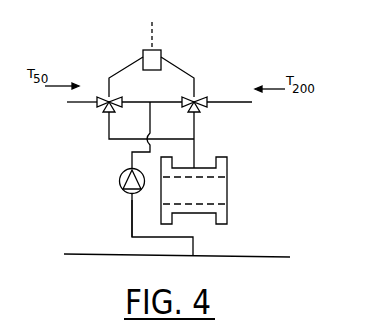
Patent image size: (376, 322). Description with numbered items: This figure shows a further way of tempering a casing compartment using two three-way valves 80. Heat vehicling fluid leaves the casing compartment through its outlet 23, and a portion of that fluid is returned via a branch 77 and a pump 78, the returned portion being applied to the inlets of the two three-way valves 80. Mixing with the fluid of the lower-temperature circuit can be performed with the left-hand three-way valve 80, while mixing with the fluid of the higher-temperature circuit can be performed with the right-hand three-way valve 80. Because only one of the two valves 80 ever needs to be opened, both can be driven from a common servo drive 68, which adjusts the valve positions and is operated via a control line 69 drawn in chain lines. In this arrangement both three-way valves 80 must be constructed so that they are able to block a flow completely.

The control line 69 is at (153, 31).
The servo drive 68 is at (161, 55).
The three-way valves 80 is at (182, 100).
The pump 78 is at (119, 181).
The branch 77 is at (132, 219).
The outlet 23 is at (193, 231).